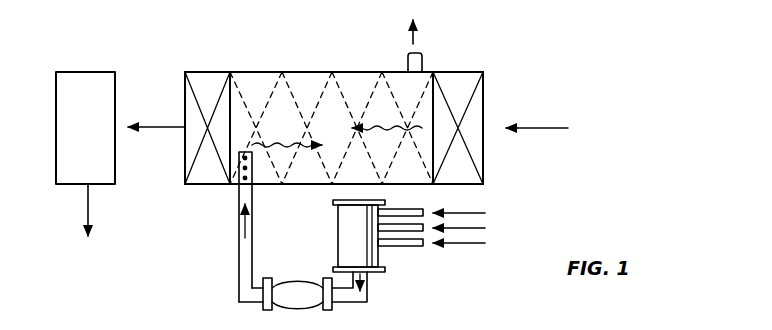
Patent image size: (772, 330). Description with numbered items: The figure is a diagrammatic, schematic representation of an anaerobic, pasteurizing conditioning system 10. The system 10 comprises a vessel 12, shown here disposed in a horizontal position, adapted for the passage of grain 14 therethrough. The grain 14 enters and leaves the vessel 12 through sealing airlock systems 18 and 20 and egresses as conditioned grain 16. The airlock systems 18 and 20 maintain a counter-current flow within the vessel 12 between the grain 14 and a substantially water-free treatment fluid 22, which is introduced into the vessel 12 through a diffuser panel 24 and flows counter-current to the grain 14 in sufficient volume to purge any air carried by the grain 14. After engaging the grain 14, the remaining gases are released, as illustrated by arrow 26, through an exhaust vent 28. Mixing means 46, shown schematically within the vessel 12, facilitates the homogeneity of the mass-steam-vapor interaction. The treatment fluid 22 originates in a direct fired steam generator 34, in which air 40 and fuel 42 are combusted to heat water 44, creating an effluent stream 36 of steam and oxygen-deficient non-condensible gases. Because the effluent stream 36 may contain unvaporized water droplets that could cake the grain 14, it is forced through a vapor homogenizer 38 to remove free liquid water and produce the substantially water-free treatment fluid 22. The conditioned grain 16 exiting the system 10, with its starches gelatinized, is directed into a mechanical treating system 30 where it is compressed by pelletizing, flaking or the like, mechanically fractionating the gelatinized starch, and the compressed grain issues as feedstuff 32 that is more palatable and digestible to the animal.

The anaerobic, pasteurizing conditioning system 10 is at (238, 58).
The vessel 12 is at (287, 72).
The grain 14 is at (382, 128).
The conditioned grain 16 is at (153, 127).
The sealing airlock system 18 is at (483, 88).
The sealing airlock system 20 is at (200, 184).
The substantially water-free treatment fluid 22 is at (243, 233).
The diffuser panel 24 is at (253, 176).
The arrow (discharge gases) 26 is at (415, 42).
The exhaust vent 28 is at (424, 62).
The mechanical treating system 30 is at (78, 72).
The feedstuff 32 is at (88, 204).
The direct fired steam generator 34 is at (385, 268).
The effluent stream 36 is at (366, 283).
The vapor homogenizer 38 is at (312, 305).
The air 40 is at (476, 213).
The fuel 42 is at (482, 228).
The water 44 is at (477, 243).
The mixing means 46 is at (340, 72).